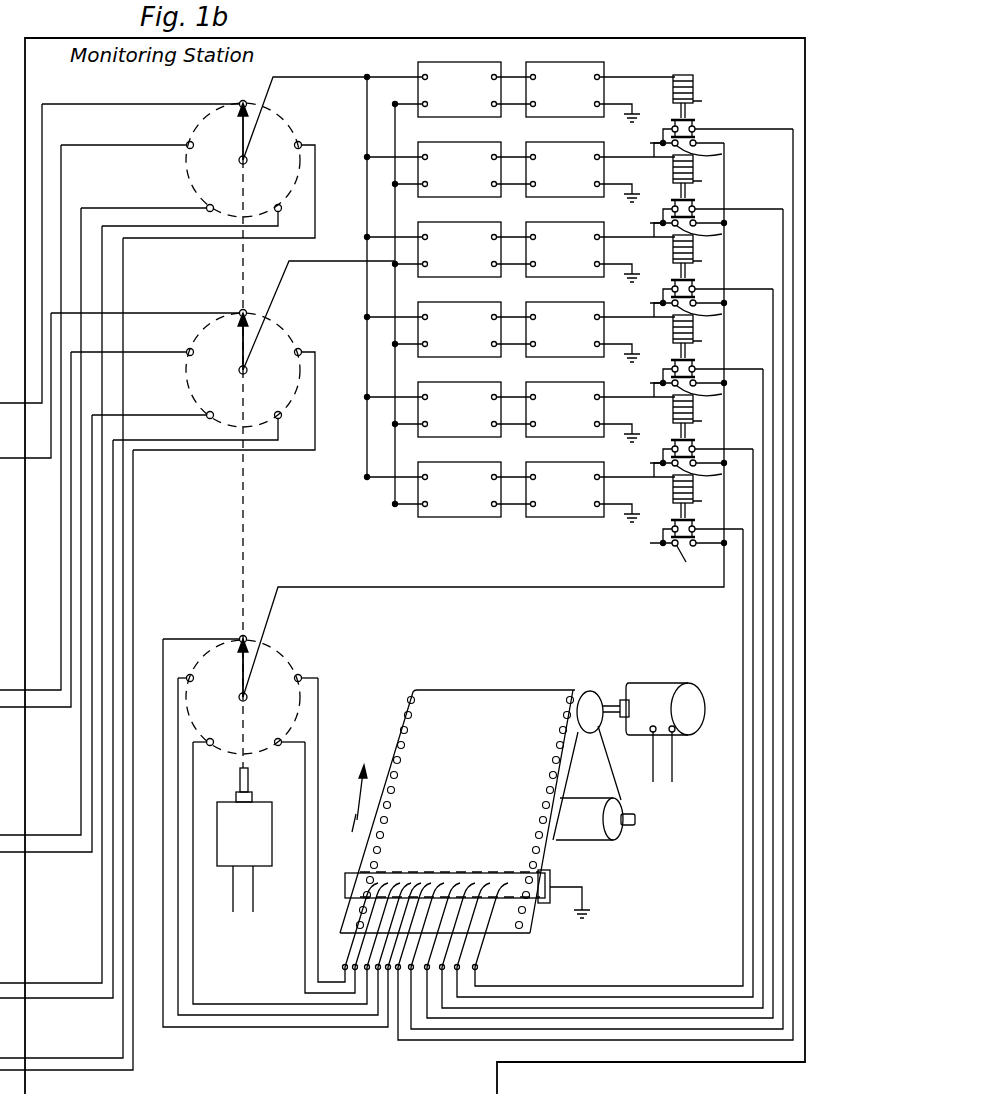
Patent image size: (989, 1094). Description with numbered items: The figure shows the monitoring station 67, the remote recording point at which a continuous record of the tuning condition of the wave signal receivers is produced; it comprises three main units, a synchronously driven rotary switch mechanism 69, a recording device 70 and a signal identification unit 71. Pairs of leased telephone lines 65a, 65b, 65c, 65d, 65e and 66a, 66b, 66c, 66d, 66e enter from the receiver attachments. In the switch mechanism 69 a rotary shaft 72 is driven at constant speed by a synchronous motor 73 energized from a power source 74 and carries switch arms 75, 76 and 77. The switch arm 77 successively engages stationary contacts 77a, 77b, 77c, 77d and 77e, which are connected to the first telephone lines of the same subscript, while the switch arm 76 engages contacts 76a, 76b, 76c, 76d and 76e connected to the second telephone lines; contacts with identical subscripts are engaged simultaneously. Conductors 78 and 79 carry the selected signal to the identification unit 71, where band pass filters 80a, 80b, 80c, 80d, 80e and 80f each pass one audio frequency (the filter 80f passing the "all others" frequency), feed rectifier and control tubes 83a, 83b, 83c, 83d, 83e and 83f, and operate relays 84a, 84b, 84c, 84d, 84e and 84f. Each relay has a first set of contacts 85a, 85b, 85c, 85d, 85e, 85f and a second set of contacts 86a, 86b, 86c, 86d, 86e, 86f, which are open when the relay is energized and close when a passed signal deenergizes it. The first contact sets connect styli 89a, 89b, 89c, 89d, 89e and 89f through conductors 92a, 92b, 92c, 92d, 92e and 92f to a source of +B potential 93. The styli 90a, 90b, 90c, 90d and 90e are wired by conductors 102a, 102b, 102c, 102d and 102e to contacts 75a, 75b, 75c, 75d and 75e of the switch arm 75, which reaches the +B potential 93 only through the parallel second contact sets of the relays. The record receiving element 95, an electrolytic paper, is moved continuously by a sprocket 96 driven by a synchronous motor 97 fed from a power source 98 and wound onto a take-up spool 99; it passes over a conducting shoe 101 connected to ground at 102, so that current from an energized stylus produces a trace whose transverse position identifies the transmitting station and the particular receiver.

The monitoring station 67 is at (356, 40).
The synchronously driven rotary switch mechanism 69 is at (280, 509).
The recording device 70 is at (370, 746).
The signal identification unit 71 is at (499, 219).
The rotary shaft 72 is at (249, 779).
The synchronous motor 73 is at (273, 822).
The power source 74 is at (253, 916).
The switch arm 75 is at (238, 680).
The stationary contact 75a is at (248, 634).
The stationary contact 75b is at (215, 676).
The stationary contact 75c is at (218, 728).
The stationary contact 75d is at (278, 738).
The stationary contact 75e is at (300, 674).
The switch arm 76 is at (240, 348).
The contact 76a is at (252, 308).
The contact 76b is at (191, 348).
The contact 76c is at (207, 413).
The contact 76d is at (277, 411).
The contact 76e is at (300, 348).
The switch arm 77 is at (240, 139).
The stationary contact 77a is at (255, 96).
The stationary contact 77b is at (190, 141).
The stationary contact 77c is at (207, 206).
The stationary contact 77d is at (283, 190).
The stationary contact 77e is at (300, 141).
The conductor 78 is at (325, 80).
The conductor 79 is at (333, 260).
The band pass filter 80a is at (418, 90).
The band pass filter 80b is at (438, 142).
The band pass filter 80c is at (438, 222).
The band pass filter 80d is at (438, 302).
The band pass filter 80e is at (438, 382).
The band pass filter 80f is at (438, 462).
The rectifier and control tube 83a is at (568, 62).
The rectifier and control tube 83b is at (568, 142).
The rectifier and control tube 83c is at (568, 222).
The rectifier and control tube 83d is at (568, 302).
The rectifier and control tube 83e is at (568, 382).
The rectifier and control tube 83f is at (568, 462).
The relay 84a is at (683, 73).
The relay 84b is at (673, 176).
The relay 84c is at (673, 256).
The relay 84d is at (673, 336).
The relay 84e is at (673, 416).
The relay 84f is at (673, 496).
The relay contacts 85a is at (698, 124).
The relay contacts 85b is at (698, 204).
The relay contacts 85c is at (698, 284).
The relay contacts 85d is at (698, 364).
The relay contacts 85e is at (698, 444).
The relay contacts 85f is at (698, 524).
The relay contacts 86a is at (690, 149).
The relay contacts 86b is at (690, 229).
The relay contacts 86c is at (689, 309).
The relay contacts 86d is at (690, 389).
The relay contacts 86e is at (690, 469).
The relay contacts 86f is at (677, 556).
The stylus 89a is at (433, 882).
The stylus 89b is at (446, 882).
The stylus 89c is at (462, 882).
The stylus 89d is at (477, 882).
The stylus 89e is at (470, 952).
The stylus 89f is at (478, 968).
The stylus 90a is at (423, 882).
The stylus 90b is at (413, 882).
The stylus 90c is at (402, 882).
The stylus 90d is at (390, 882).
The stylus 90e is at (380, 882).
The conductor 92a is at (417, 1040).
The conductor 92b is at (475, 1030).
The conductor 92c is at (543, 1018).
The conductor 92d is at (618, 1008).
The conductor 92e is at (615, 997).
The conductor 92f is at (690, 974).
The source of +B potential 93 is at (654, 150).
The record receiving element 95 is at (483, 708).
The sprocket 96 is at (596, 694).
The synchronous motor 97 is at (660, 692).
The source of power 98 is at (672, 764).
The take-up spool 99 is at (617, 826).
The conducting shoe 101 is at (548, 874).
The ground 102 is at (590, 894).
The conductor 102a is at (255, 1028).
The conductor 102b is at (330, 1028).
The conductor 102c is at (248, 997).
The conductor 102d is at (303, 978).
The conductor 102e is at (316, 950).
The telephone line 65a is at (21, 253).
The telephone line 65b is at (44, 688).
The telephone line 65c is at (44, 834).
The telephone line 65d is at (48, 982).
The telephone line 65e is at (48, 1057).
The telephone line 66a is at (25, 385).
The telephone line 66b is at (50, 707).
The telephone line 66c is at (50, 852).
The telephone line 66d is at (50, 998).
The telephone line 66e is at (50, 1070).